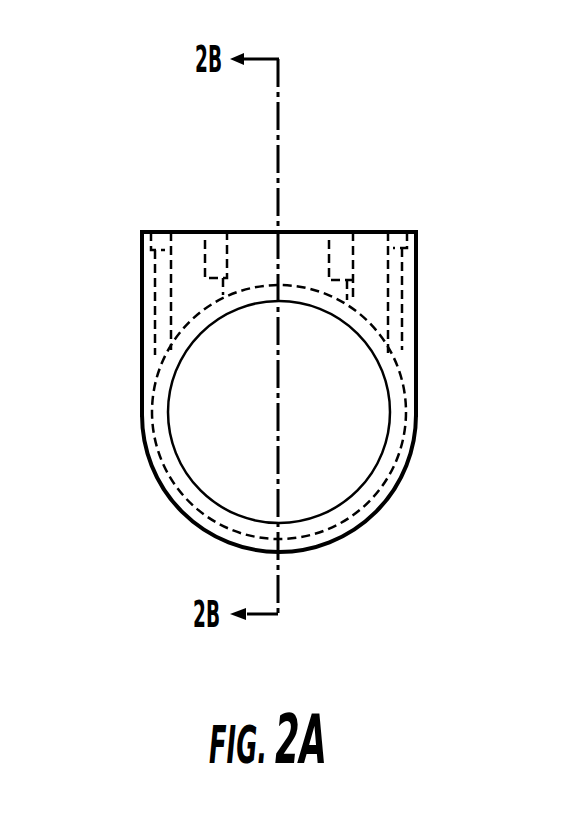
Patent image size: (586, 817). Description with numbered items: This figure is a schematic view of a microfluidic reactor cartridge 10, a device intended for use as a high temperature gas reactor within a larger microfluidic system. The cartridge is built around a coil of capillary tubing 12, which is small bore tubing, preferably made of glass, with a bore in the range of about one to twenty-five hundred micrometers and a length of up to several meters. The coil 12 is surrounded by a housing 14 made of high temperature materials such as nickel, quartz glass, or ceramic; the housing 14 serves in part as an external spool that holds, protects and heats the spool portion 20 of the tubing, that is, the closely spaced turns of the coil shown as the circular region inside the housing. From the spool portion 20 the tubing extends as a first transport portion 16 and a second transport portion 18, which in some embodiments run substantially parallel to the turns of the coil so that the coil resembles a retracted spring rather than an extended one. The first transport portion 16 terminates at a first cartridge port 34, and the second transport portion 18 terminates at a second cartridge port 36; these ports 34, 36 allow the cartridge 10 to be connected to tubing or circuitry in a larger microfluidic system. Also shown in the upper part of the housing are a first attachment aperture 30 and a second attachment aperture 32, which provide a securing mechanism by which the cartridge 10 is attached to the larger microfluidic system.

The microfluidic reactor cartridge 10 is at (281, 309).
The coil of capillary tubing 12 is at (391, 388).
The housing 14 is at (370, 242).
The first transport portion 16 is at (158, 280).
The second transport portion 18 is at (400, 290).
The spool portion 20 is at (343, 522).
The first attachment aperture 30 is at (220, 247).
The second attachment aperture 32 is at (343, 240).
The first cartridge port 34 is at (163, 235).
The second cartridge port 36 is at (398, 235).